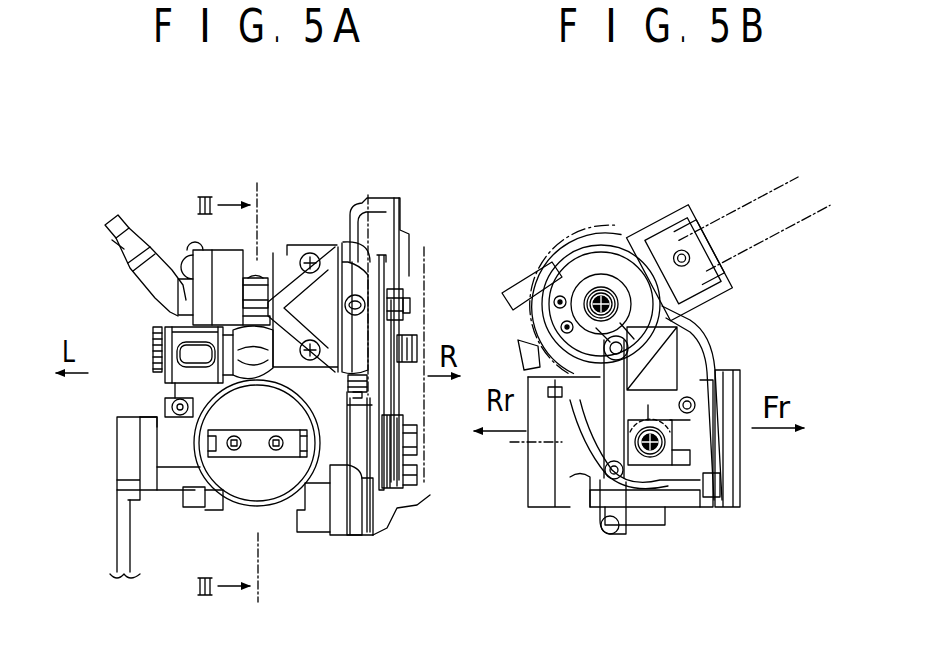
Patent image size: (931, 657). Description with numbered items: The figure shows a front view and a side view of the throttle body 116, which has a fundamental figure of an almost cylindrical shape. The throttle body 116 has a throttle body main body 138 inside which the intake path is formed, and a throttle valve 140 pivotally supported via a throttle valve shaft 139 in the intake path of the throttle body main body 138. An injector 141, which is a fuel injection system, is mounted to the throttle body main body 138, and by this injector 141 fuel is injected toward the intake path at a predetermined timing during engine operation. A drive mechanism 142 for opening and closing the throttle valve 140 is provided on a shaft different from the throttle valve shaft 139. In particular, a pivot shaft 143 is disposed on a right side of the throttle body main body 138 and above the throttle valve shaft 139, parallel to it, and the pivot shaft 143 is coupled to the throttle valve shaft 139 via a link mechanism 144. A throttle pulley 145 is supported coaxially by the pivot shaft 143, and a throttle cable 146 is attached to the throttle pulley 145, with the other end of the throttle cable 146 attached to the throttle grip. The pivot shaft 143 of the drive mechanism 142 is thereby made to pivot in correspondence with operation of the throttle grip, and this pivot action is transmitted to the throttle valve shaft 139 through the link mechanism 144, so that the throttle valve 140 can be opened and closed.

In FIG. 5A, the throttle body 116 is at (140, 180).
In FIG. 5B, the throttle body 116 is at (705, 170).
In FIG. 5A, the throttle body main body 138 is at (190, 443).
In FIG. 5B, the throttle body main body 138 is at (724, 370).
In FIG. 5A, the throttle valve shaft 139 is at (243, 500).
In FIG. 5B, the throttle valve shaft 139 is at (653, 457).
In FIG. 5A, the throttle valve 140 is at (275, 483).
In FIG. 5A, the injector 141 is at (243, 350).
In FIG. 5A, the drive mechanism 142 is at (410, 270).
In FIG. 5B, the drive mechanism 142 is at (725, 309).
In FIG. 5A, the pivot shaft 143 is at (409, 307).
In FIG. 5B, the pivot shaft 143 is at (600, 297).
In FIG. 5A, the link mechanism 144 is at (407, 403).
In FIG. 5B, the link mechanism 144 is at (583, 497).
In FIG. 5A, the throttle pulley 145 is at (392, 262).
In FIG. 5B, the throttle pulley 145 is at (608, 284).
In FIG. 5B, the throttle cable 146 is at (788, 144).